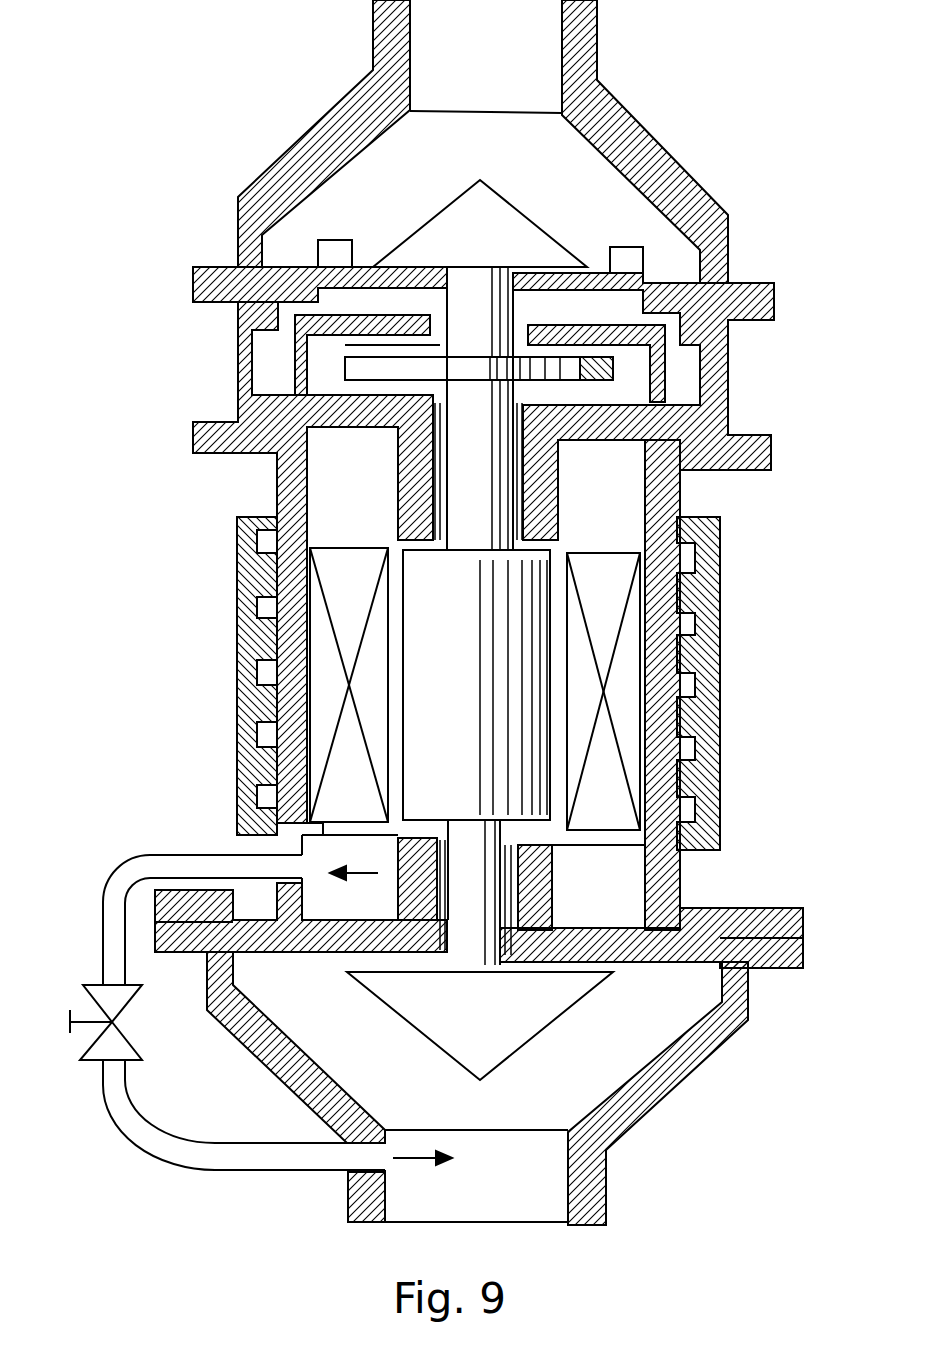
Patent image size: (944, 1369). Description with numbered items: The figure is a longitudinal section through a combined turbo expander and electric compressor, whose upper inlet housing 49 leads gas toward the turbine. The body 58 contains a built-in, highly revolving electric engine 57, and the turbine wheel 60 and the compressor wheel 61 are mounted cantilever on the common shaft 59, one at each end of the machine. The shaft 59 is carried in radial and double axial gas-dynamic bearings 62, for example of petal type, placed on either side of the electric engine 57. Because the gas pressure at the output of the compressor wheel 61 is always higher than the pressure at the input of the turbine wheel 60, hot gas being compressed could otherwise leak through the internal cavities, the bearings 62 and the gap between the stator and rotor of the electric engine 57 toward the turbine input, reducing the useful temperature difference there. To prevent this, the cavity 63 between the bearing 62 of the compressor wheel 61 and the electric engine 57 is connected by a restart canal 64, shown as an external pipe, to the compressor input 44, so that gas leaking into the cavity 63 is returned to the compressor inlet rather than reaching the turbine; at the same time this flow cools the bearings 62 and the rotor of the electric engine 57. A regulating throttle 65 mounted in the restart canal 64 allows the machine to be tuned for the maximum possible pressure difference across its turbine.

The compressor input 44 is at (560, 1107).
The turbine inlet housing 49 is at (355, 178).
The electric engine 57 is at (605, 600).
The body 58 is at (762, 918).
The shaft 59 is at (475, 473).
The turbine wheel 60 is at (522, 237).
The compressor wheel 61 is at (548, 1008).
The radial and double axial gas-dynamic bearing 62 is at (430, 390).
The cavity 63 is at (325, 850).
The restart canal 64 is at (110, 915).
The regulating throttle 65 is at (110, 1042).